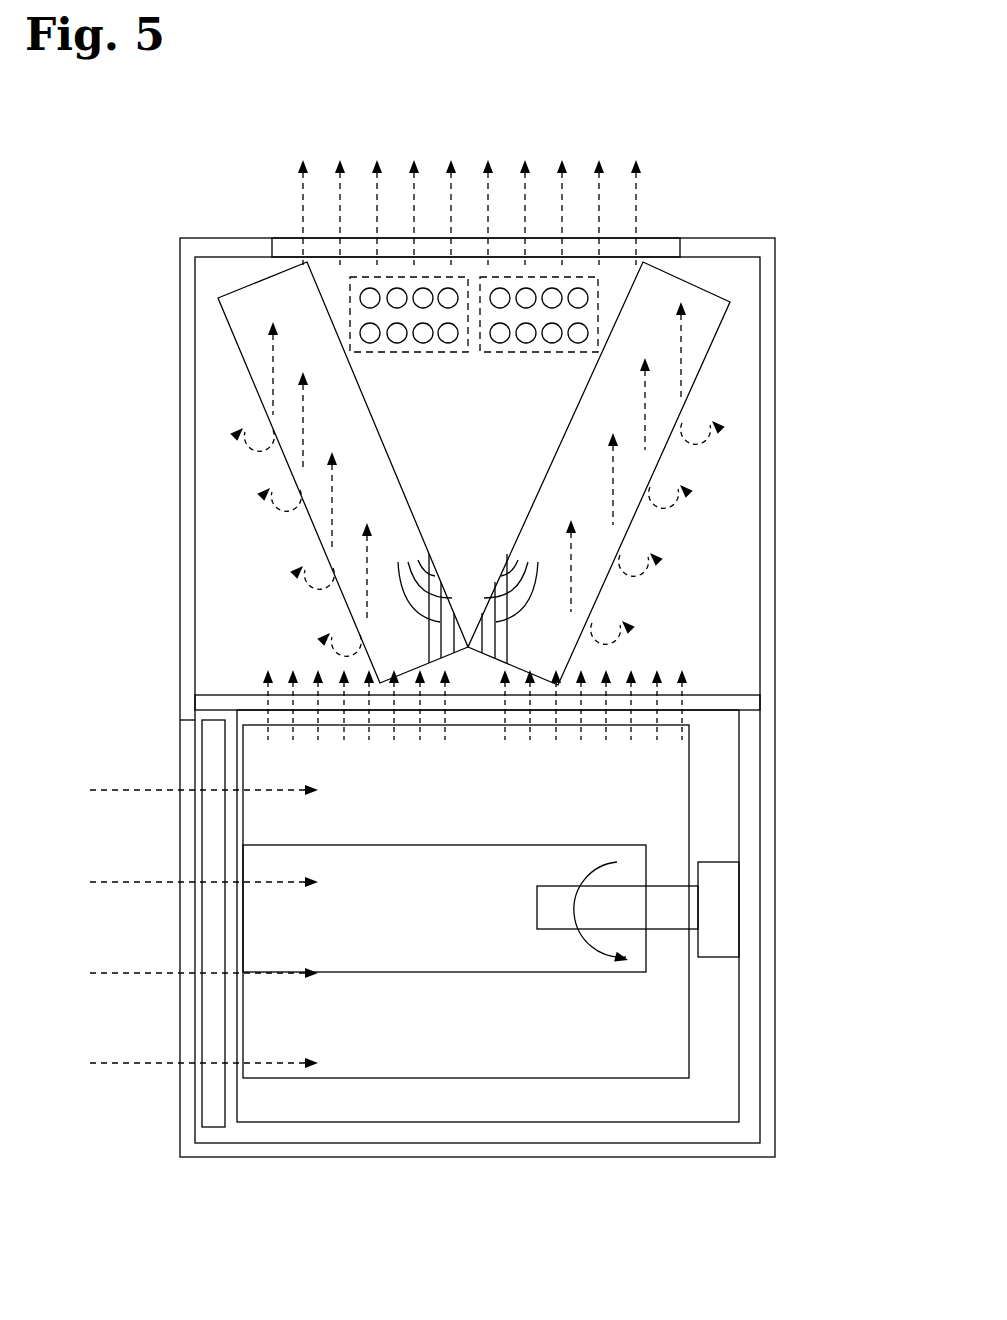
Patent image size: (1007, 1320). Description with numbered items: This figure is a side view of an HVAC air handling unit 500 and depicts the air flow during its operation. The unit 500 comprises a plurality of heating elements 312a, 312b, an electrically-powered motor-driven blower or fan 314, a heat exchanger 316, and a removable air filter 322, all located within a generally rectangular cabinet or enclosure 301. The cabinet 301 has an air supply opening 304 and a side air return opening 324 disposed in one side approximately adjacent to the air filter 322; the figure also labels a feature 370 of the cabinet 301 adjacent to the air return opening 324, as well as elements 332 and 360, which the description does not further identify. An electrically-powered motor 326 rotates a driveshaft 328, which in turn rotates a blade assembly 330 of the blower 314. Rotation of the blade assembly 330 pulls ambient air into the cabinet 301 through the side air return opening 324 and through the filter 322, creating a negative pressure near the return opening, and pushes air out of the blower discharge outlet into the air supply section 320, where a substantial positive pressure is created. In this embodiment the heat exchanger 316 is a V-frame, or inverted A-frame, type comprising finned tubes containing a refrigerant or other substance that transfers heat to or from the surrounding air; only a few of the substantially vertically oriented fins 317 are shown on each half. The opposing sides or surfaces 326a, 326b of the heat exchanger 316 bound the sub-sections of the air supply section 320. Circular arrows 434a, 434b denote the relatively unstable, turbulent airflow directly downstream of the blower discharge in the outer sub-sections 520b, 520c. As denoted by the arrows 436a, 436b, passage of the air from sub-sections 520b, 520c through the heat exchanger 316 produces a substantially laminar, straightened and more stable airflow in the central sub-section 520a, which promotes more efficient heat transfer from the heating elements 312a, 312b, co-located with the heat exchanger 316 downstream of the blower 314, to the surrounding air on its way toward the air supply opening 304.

The HVAC AHU 500 is at (162, 169).
The cabinet 301 is at (768, 486).
The air supply opening 304 is at (660, 243).
The heat exchanger 316 is at (235, 316).
The heating element 312a is at (452, 353).
The heating element 312b is at (520, 353).
The arrow 436a is at (306, 452).
The arrow 436b is at (614, 500).
The circular arrow 434a is at (325, 583).
The circular arrow 434b is at (665, 500).
The sub-section of air supply section 520a is at (506, 501).
The sub-section of air supply section 520b is at (301, 554).
The sub-section of air supply section 520c is at (728, 566).
The fins 317 is at (472, 603).
The side of heat exchanger 326a is at (341, 592).
The side of heat exchanger 326b is at (602, 590).
The air supply section 320 is at (220, 540).
The partition 360 is at (757, 700).
The side air return opening 324 is at (183, 740).
The fan housing outer wall 332 is at (740, 752).
The blade assembly 330 is at (670, 820).
The blower 314 is at (444, 908).
The driveshaft 328 is at (687, 913).
The electrically-powered motor 326 is at (725, 870).
The removable air filter 322 is at (210, 1097).
The portion of cabinet 370 is at (203, 1135).